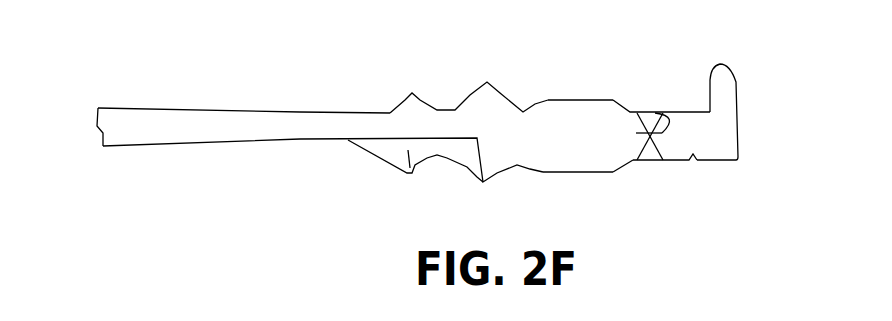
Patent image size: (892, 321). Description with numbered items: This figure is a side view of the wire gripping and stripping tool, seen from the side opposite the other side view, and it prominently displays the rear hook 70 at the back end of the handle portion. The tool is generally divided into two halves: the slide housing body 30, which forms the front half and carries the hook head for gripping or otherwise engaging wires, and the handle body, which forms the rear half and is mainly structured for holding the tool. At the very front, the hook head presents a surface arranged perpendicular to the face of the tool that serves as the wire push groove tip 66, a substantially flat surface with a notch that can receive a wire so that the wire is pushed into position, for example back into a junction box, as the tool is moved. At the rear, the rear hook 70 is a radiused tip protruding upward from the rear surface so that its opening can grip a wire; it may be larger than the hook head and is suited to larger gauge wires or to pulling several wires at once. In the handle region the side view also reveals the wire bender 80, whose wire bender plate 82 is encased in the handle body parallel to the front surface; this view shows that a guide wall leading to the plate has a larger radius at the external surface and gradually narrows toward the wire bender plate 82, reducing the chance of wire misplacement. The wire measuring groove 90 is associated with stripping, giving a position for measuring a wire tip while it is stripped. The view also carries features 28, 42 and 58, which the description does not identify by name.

The protrusion 28 is at (472, 93).
The slide housing body 30 is at (237, 143).
The tab 42 is at (437, 157).
The shoulder 58 is at (548, 100).
The wire push groove tip 66 is at (97, 126).
The rear hook 70 is at (730, 73).
The wire bender 80 is at (647, 112).
The wire bender plate 82 is at (669, 113).
The wire measuring groove 90 is at (693, 160).